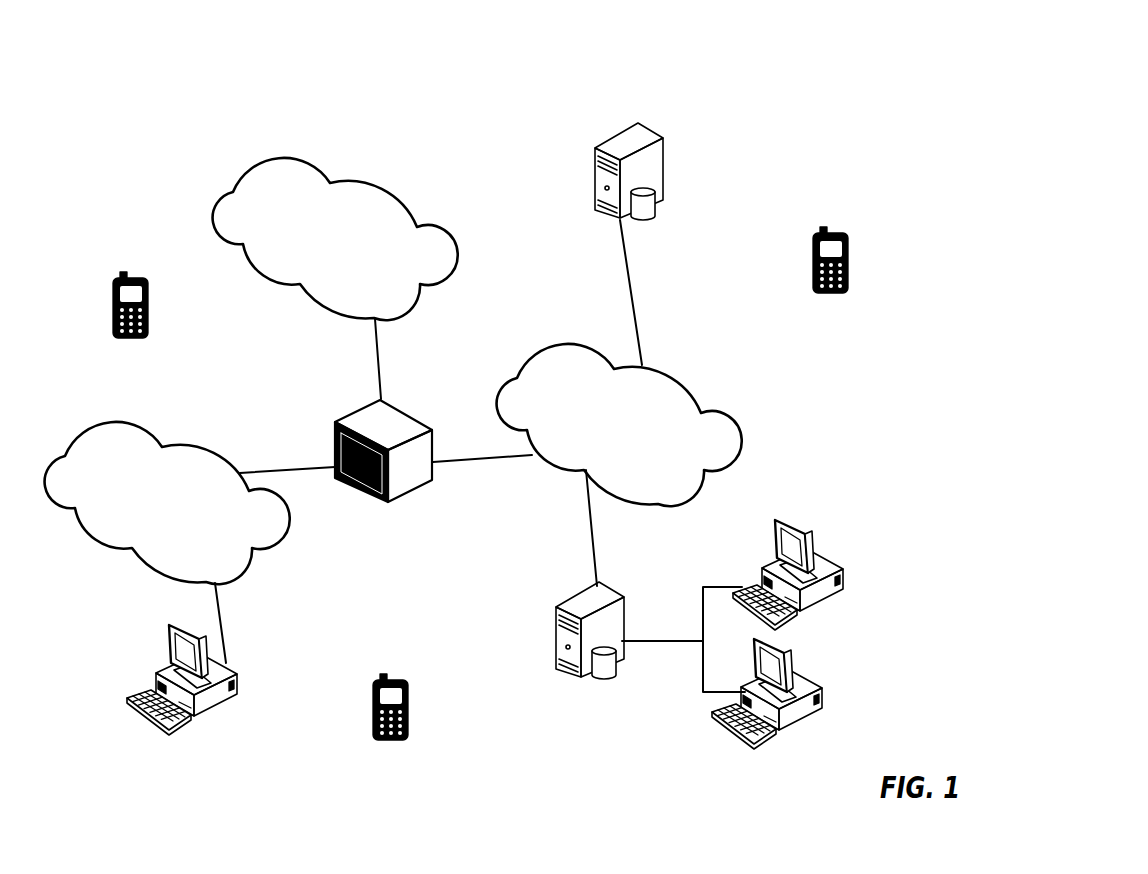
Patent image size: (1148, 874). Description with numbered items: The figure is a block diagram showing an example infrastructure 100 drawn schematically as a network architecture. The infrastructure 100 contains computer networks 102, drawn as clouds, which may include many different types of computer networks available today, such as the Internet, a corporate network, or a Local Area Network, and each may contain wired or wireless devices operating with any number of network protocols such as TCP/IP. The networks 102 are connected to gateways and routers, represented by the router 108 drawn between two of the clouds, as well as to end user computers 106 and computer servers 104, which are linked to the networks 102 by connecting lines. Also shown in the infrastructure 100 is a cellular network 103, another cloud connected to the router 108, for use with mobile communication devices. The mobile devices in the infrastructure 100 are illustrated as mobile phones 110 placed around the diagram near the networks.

The infrastructure 100 is at (766, 48).
The computer networks 102 is at (407, 464).
The cellular network 103 is at (335, 232).
The computer servers 104 is at (567, 399).
The end user computers 106 is at (514, 619).
The gateways and routers 108 is at (406, 436).
The mobile phones 110 is at (514, 465).